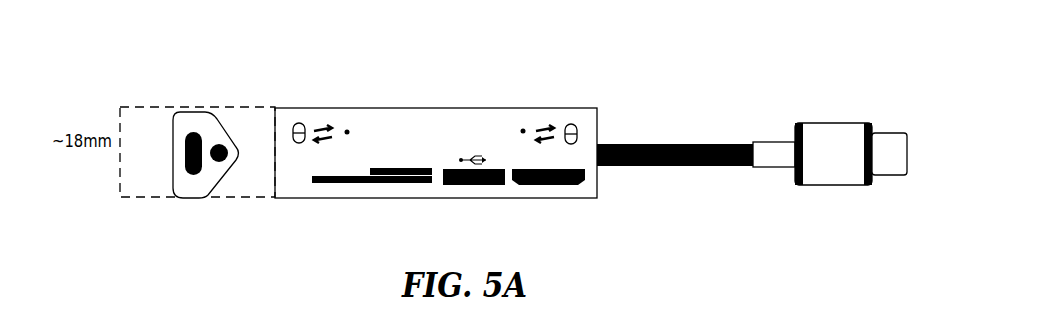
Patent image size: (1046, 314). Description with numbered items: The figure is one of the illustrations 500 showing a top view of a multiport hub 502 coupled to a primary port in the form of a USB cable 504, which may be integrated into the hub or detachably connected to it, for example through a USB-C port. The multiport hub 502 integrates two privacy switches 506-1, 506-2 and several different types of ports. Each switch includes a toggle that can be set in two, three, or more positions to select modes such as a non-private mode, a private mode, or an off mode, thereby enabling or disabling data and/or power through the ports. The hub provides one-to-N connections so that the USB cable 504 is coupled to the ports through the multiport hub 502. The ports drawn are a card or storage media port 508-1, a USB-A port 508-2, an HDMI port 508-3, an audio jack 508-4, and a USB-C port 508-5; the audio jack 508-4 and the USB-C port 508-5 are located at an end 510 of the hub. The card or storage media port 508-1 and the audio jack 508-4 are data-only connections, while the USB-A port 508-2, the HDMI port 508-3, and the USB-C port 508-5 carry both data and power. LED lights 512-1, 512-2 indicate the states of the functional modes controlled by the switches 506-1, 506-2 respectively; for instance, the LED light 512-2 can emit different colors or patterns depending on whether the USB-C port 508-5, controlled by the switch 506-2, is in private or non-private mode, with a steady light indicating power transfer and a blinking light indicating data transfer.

The illustrations 500 is at (904, 60).
The multiport hub 502 is at (445, 142).
The USB cable 504 is at (838, 122).
The switch 506-1 is at (571, 123).
The switch 506-2 is at (299, 122).
The card or storage media port 508-1 is at (362, 184).
The USB-A port 508-2 is at (475, 186).
The HDMI port 508-3 is at (548, 186).
The audio jack 508-4 is at (223, 147).
The USB-C port 508-5 is at (185, 152).
The end 510 is at (196, 110).
The LED light 512-1 is at (347, 130).
The LED light 512-2 is at (523, 129).